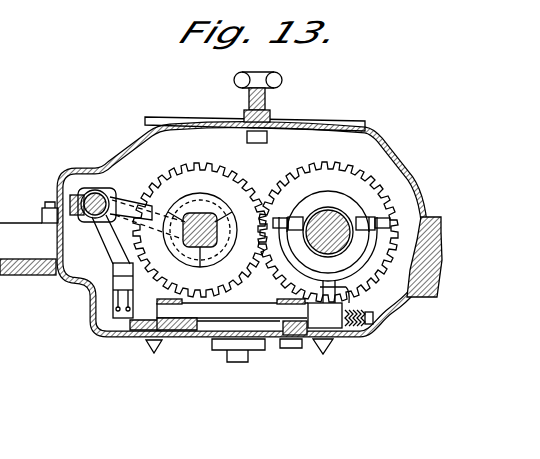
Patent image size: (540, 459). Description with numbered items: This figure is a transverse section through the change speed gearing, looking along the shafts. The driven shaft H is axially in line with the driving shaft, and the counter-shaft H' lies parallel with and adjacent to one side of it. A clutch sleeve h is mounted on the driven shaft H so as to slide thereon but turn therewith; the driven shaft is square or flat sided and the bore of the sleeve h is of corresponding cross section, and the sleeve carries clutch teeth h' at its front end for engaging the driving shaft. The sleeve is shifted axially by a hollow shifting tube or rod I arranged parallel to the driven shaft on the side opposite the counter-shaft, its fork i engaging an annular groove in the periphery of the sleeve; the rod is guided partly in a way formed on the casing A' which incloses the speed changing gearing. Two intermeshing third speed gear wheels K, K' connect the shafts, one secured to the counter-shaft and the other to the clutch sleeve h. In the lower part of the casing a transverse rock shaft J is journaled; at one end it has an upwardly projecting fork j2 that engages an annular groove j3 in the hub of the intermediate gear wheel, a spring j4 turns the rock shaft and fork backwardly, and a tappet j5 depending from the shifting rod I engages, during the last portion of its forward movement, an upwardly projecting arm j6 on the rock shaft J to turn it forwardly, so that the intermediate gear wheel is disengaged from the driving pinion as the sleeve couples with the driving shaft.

The third speed gear wheel K is at (260, 243).
The third speed gear wheel K' is at (130, 301).
The transverse rock shaft J is at (207, 310).
The fork j2 is at (367, 250).
The annular groove j3 is at (350, 214).
The spring j4 is at (345, 327).
The tappet j5 is at (99, 228).
The arm j6 is at (113, 287).
The driven shaft H is at (200, 230).
The counter-shaft H' is at (328, 224).
The clutch sleeve h is at (55, 191).
The clutch teeth h' is at (213, 239).
The shifting tube or rod I is at (111, 150).
The fork i is at (126, 205).
The casing A' is at (353, 270).